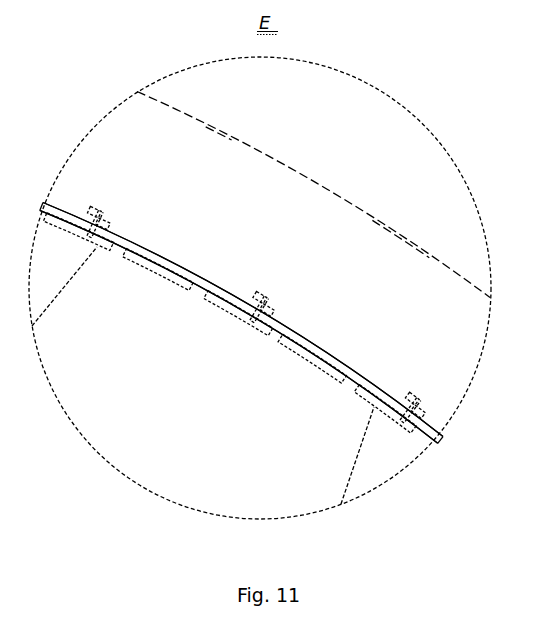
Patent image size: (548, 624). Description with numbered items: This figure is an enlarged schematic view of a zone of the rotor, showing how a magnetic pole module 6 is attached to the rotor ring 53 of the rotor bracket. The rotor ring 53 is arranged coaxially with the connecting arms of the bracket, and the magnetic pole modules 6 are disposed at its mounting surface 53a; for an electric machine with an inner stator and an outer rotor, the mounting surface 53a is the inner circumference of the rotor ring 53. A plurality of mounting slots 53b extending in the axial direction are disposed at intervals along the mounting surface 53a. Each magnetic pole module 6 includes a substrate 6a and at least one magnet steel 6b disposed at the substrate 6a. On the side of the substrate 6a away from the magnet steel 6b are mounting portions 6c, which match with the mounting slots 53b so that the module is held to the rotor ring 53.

The magnetic pole module 6 is at (334, 379).
The substrate 6a is at (163, 267).
The magnet steel 6b is at (178, 287).
The mounting portion 6c is at (110, 213).
The rotor ring 53 is at (309, 202).
The mounting surface 53a is at (317, 339).
The mounting slot 53b is at (271, 292).